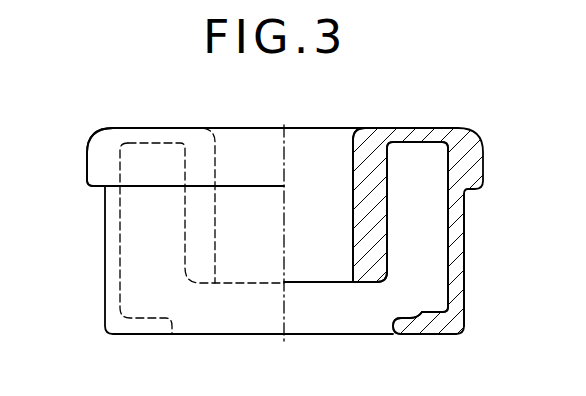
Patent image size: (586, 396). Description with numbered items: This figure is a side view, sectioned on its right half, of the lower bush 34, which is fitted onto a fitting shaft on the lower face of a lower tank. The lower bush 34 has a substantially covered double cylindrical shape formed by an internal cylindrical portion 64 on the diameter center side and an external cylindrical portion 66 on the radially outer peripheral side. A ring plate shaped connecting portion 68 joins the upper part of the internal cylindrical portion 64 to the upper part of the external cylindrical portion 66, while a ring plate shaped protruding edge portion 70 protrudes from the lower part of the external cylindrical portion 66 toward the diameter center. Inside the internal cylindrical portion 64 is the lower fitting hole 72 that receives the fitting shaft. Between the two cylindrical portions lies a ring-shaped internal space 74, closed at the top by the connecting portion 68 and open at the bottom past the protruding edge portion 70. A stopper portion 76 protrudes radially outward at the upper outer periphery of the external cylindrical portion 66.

The lower bush 34 is at (472, 127).
The internal cylindrical portion 64 is at (375, 263).
The external cylindrical portion 66 is at (460, 213).
The connecting portion 68 is at (405, 130).
The protruding edge portion 70 is at (422, 335).
The lower fitting hole 72 is at (353, 165).
The internal space 74 is at (417, 203).
The stopper portion 76 is at (100, 165).